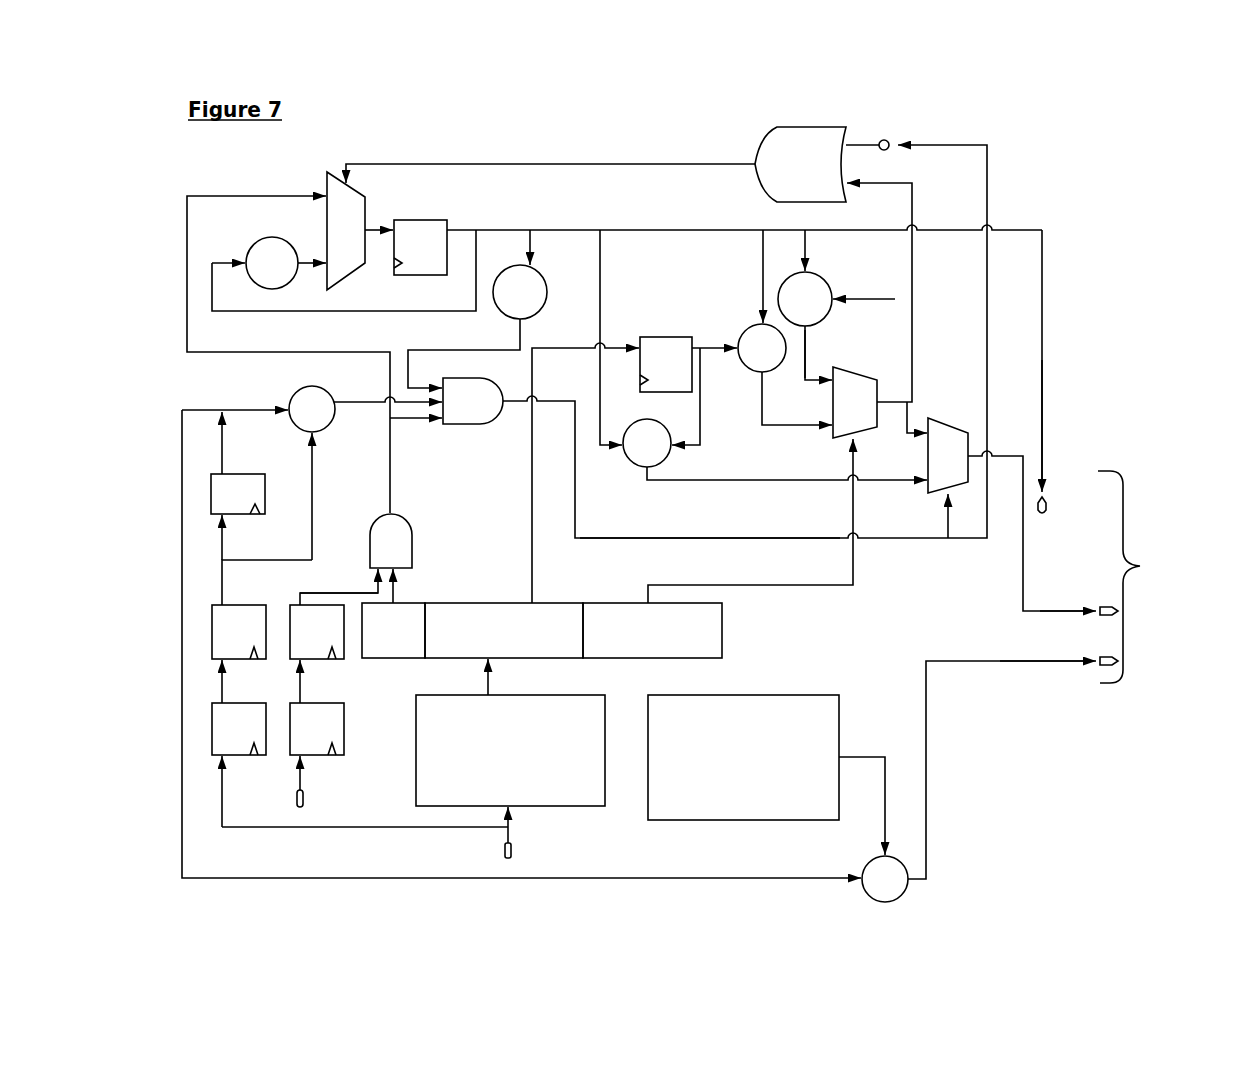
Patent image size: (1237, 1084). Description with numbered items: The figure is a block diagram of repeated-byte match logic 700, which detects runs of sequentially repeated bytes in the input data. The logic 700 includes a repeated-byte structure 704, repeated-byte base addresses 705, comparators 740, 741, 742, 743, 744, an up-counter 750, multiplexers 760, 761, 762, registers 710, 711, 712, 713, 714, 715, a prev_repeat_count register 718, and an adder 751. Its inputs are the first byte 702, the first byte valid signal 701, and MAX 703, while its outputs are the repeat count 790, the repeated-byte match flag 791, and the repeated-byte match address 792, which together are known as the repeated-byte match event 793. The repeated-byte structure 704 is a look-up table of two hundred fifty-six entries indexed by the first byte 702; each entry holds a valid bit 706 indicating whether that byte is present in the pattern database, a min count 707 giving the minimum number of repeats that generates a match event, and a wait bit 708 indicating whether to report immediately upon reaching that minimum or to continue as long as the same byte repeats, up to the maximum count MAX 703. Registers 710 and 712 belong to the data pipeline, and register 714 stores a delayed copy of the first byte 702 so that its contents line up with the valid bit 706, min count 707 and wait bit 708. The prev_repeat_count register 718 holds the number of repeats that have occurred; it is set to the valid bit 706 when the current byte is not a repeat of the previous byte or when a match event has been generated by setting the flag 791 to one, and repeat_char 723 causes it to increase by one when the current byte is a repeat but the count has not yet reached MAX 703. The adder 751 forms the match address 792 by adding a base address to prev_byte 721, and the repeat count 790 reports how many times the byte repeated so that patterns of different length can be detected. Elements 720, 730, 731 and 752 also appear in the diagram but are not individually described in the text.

The repeated-byte match logic 700 is at (1072, 806).
The first byte valid 701 is at (298, 810).
The first byte 702 is at (510, 847).
The MAX 703 is at (867, 297).
The repeated-byte structure 704 is at (510, 750).
The repeated-byte base addresses 705 is at (743, 757).
The valid bit 706 is at (393, 630).
The min count 707 is at (504, 630).
The wait bit 708 is at (652, 630).
The register 710 is at (238, 702).
The register 711 is at (343, 733).
The register 712 is at (232, 663).
The register 713 is at (325, 660).
The register 714 is at (242, 473).
The register 715 is at (663, 393).
The prev_repeat_count 718 is at (420, 277).
The current byte valid signal 720 is at (334, 580).
The prev_byte 721 is at (183, 408).
The repeat_char 723 is at (650, 538).
The AND gate 730 is at (412, 530).
The AND gate 731 is at (463, 425).
The comparator 740 is at (328, 427).
The comparator 741 is at (545, 268).
The comparator 742 is at (818, 320).
The comparator 743 is at (753, 373).
The comparator 744 is at (668, 460).
The up-counter 750 is at (272, 237).
The adder 751 is at (907, 888).
The OR gate 752 is at (812, 127).
The multiplexer 760 is at (367, 190).
The multiplexer 761 is at (833, 438).
The multiplexer 762 is at (935, 418).
The repeat count 790 is at (1043, 365).
The repeated-byte match flag 791 is at (1060, 611).
The repeated-byte match address 792 is at (1030, 662).
The repeated-byte match event 793 is at (1138, 578).